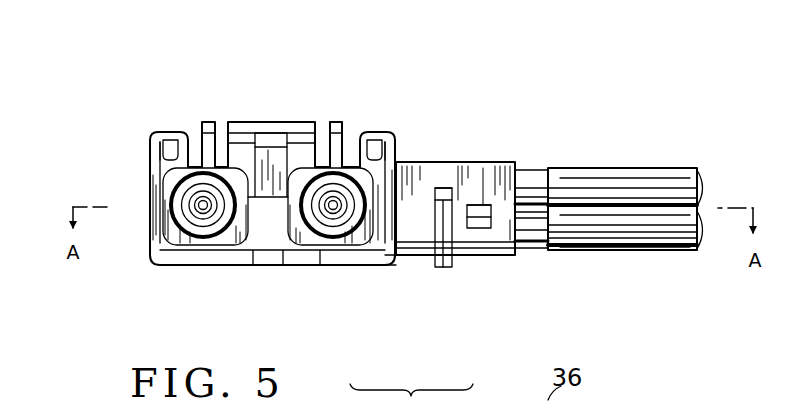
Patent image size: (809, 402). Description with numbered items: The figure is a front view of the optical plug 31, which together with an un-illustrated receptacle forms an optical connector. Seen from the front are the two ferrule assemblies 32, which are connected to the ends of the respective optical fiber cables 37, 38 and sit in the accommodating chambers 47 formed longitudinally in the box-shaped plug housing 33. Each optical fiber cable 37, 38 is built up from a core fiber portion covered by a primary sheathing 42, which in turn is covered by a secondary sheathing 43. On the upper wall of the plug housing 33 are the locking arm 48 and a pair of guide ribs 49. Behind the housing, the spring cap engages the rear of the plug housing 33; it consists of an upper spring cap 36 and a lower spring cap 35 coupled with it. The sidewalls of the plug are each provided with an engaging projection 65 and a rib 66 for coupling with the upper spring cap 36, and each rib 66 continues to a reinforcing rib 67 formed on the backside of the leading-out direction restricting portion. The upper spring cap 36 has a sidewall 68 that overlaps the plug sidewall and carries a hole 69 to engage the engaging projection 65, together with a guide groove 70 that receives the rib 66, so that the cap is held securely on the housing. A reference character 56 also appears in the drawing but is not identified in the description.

The optical plug 31 is at (203, 98).
The ferrule assemblies 32 is at (183, 228).
The plug housing 33 is at (333, 125).
The lower spring cap 35 is at (390, 258).
The upper spring cap 36 is at (417, 260).
The optical fiber cable 37 is at (637, 250).
The optical fiber cable 38 is at (628, 168).
The primary sheathing 42 is at (523, 230).
The secondary sheathing 43 is at (655, 222).
The accommodating chambers 47 is at (204, 230).
The locking arm 48 is at (268, 122).
The guide ribs 49 is at (162, 150).
The locking slot 56 is at (168, 137).
The engaging projection 65 is at (475, 218).
The rib 66 is at (450, 267).
The reinforcing rib 67 is at (393, 258).
The sidewall 68 is at (425, 180).
The hole 69 is at (485, 205).
The guide groove 70 is at (445, 187).